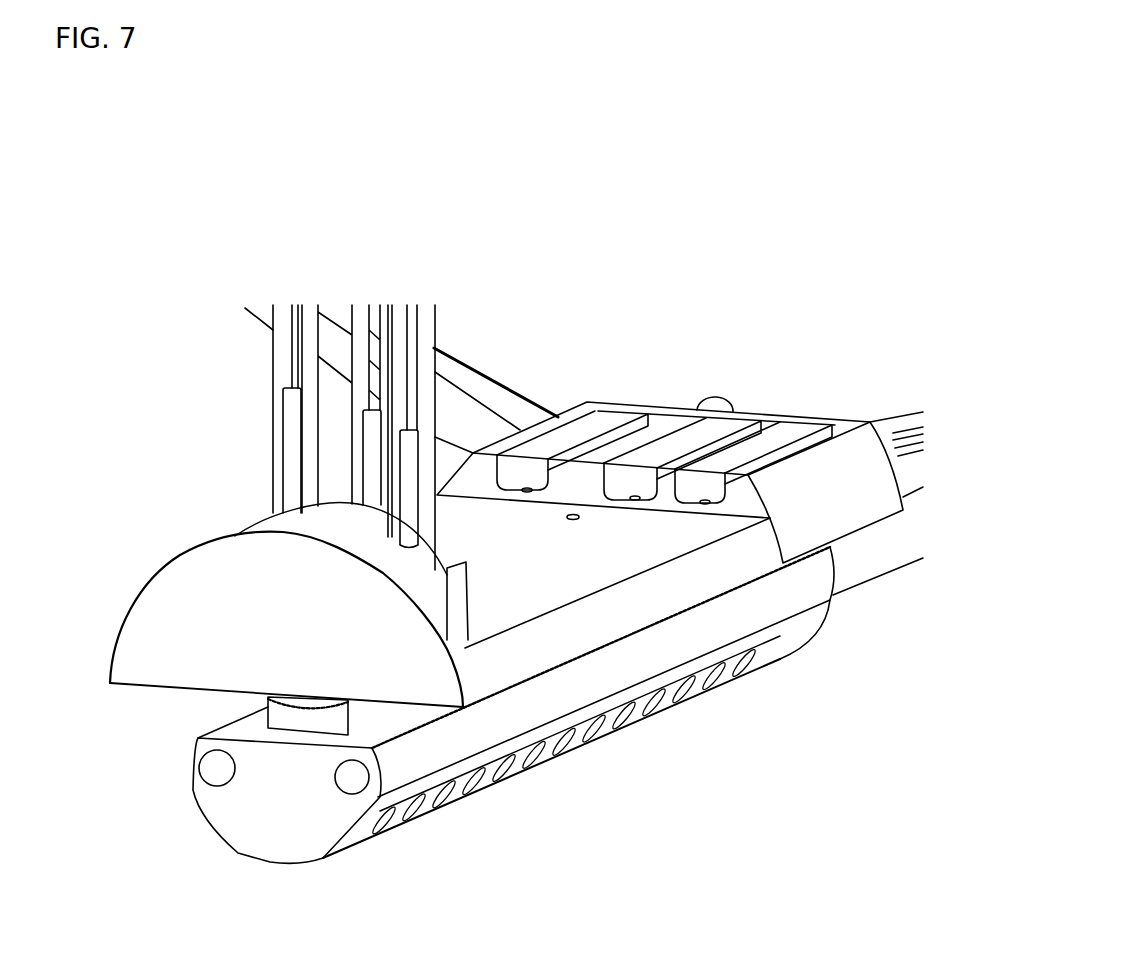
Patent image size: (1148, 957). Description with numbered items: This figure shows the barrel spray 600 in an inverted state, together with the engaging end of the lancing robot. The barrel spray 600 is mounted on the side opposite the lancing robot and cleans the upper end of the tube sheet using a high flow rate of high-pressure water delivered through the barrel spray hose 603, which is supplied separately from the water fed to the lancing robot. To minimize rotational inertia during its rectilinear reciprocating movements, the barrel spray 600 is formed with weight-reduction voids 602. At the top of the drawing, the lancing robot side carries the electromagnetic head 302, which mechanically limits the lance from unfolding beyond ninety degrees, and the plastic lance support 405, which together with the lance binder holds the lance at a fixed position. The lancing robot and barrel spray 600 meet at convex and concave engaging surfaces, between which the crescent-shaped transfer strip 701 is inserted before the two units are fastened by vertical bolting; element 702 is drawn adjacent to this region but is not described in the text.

The electromagnetic head 302 is at (203, 575).
The lance support 405 is at (292, 450).
The barrel spray 600 is at (598, 738).
The weight-reduction voids 602 is at (347, 780).
The barrel spray hose 603 is at (865, 573).
The transfer strip 701 is at (262, 700).
The arm 702 is at (453, 397).